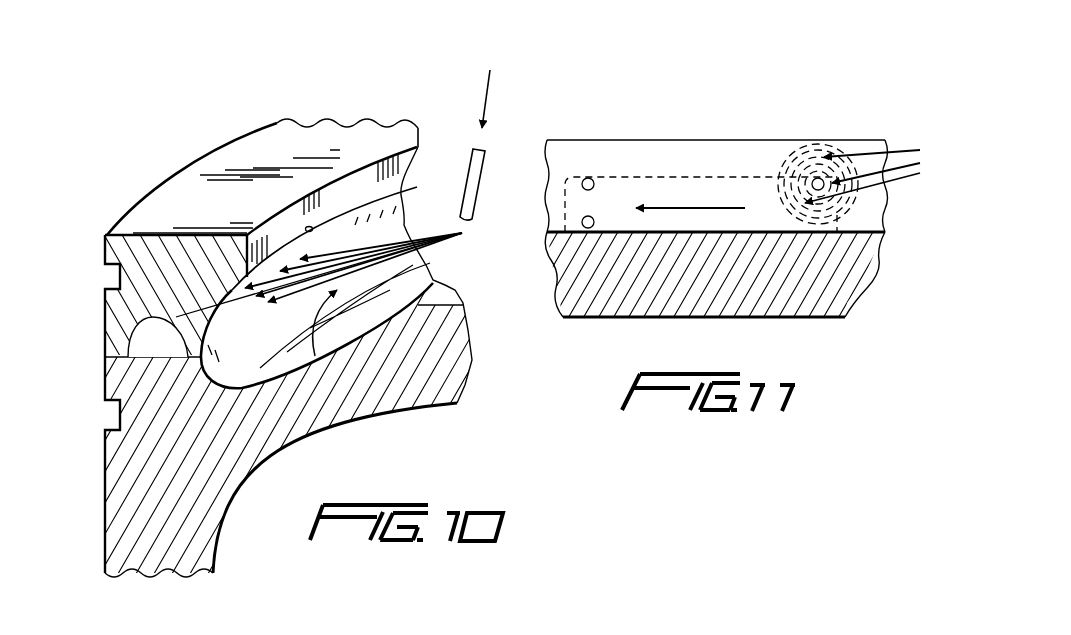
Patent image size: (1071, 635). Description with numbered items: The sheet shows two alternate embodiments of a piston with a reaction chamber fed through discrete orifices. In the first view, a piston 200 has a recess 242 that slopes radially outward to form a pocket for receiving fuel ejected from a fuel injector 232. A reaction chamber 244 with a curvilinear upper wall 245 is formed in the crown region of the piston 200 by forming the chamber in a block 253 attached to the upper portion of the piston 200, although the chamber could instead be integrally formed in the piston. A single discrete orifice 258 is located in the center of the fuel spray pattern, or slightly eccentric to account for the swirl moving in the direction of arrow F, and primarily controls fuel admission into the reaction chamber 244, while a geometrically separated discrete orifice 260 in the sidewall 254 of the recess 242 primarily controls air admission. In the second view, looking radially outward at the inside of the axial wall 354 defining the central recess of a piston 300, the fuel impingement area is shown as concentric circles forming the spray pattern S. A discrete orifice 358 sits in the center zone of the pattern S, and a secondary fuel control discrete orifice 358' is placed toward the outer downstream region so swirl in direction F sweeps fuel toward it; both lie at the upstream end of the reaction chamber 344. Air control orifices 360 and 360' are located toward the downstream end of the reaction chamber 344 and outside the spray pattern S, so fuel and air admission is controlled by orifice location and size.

In FIG. 10, the piston 200 is at (103, 510).
In FIG. 10, the fuel injector 232 is at (458, 228).
In FIG. 10, the recess 242 is at (400, 297).
In FIG. 10, the reaction chamber 244 is at (106, 400).
In FIG. 10, the curvilinear upper wall 245 is at (130, 327).
In FIG. 10, the block 253 is at (122, 255).
In FIG. 10, the sidewall 254 is at (353, 197).
In FIG. 10, the discrete orifice 258 is at (317, 325).
In FIG. 10, the discrete orifice 260 is at (305, 228).
In FIG. 10, the swirl direction arrow F is at (325, 320).
In FIG. 11, the swirl direction arrow F is at (725, 207).
In FIG. 11, the piston 300 is at (847, 300).
In FIG. 11, the reaction chamber 344 is at (660, 173).
In FIG. 11, the axial wall 354 is at (742, 153).
In FIG. 11, the discrete orifice 358 is at (855, 141).
In FIG. 11, the secondary fuel control discrete orifice 358' is at (809, 137).
In FIG. 11, the fuel spray pattern S is at (818, 140).
In FIG. 11, the air control orifice 360 is at (602, 119).
In FIG. 11, the air control orifice 360' is at (544, 266).